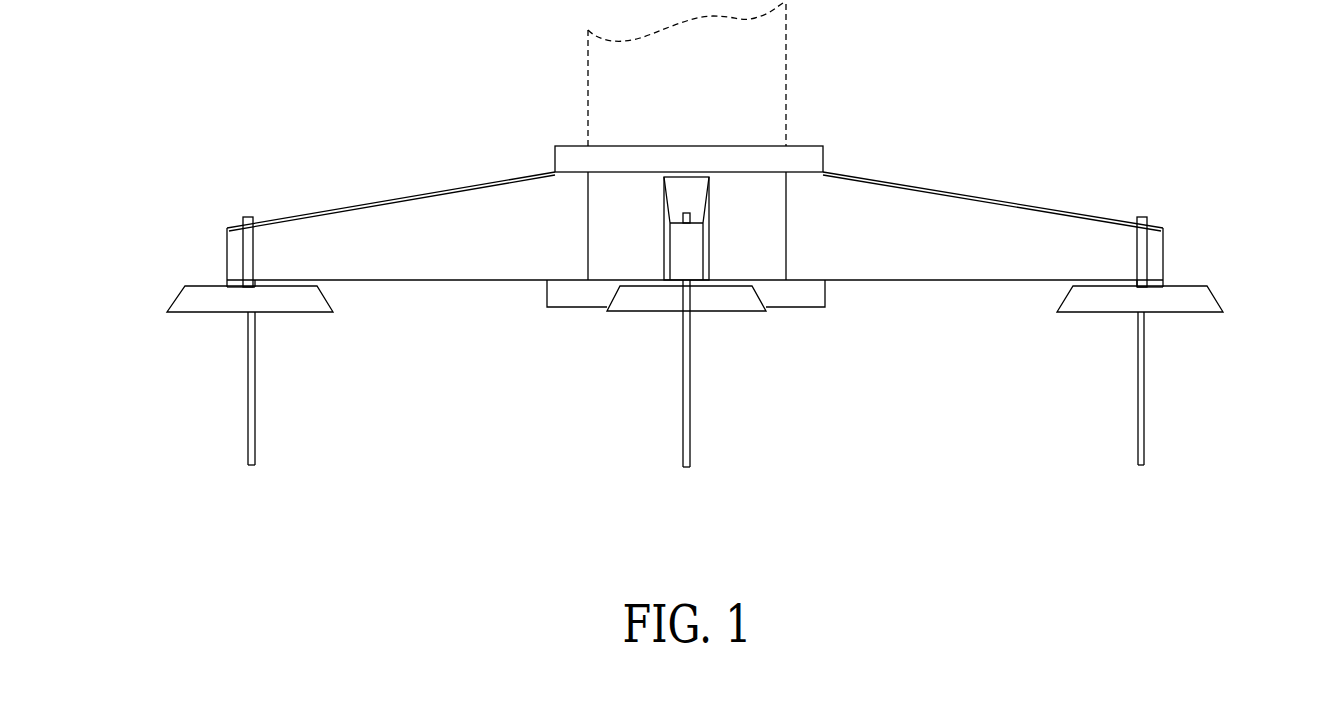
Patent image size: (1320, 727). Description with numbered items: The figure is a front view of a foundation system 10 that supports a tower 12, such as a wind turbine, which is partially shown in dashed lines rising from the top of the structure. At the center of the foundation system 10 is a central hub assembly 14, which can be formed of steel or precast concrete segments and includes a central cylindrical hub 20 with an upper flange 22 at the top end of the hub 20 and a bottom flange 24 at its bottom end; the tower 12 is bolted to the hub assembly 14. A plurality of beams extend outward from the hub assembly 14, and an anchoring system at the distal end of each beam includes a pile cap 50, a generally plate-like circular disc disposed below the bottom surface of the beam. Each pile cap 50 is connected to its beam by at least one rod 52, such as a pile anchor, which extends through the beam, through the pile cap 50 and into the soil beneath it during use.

The foundation system 10 is at (545, 100).
The tower 12 is at (790, 56).
The central hub assembly 14 is at (546, 321).
The central cylindrical hub 20 is at (757, 225).
The upper flange 22 is at (812, 158).
The bottom flange 24 is at (815, 293).
The pile cap 50 is at (1198, 312).
The rod 52 is at (248, 440).